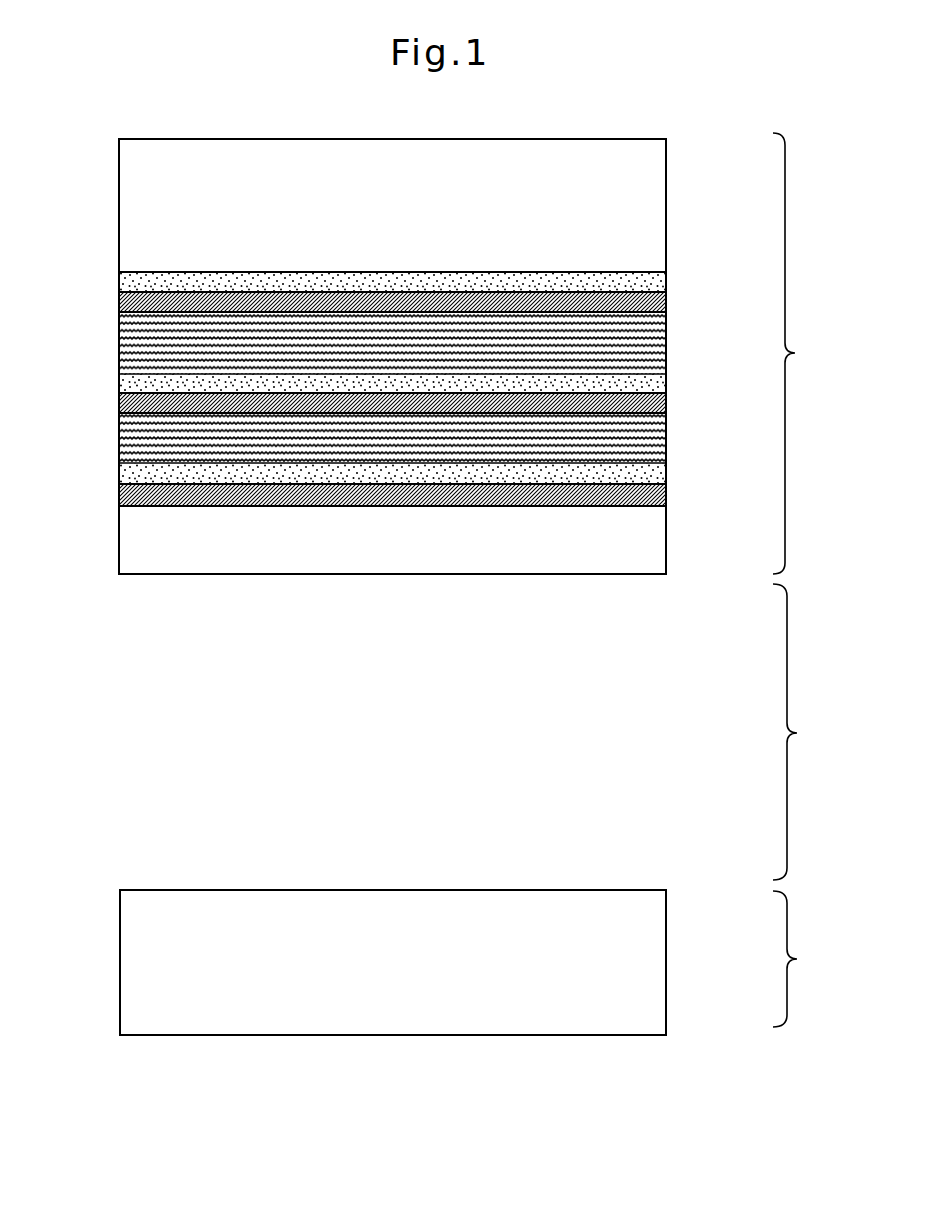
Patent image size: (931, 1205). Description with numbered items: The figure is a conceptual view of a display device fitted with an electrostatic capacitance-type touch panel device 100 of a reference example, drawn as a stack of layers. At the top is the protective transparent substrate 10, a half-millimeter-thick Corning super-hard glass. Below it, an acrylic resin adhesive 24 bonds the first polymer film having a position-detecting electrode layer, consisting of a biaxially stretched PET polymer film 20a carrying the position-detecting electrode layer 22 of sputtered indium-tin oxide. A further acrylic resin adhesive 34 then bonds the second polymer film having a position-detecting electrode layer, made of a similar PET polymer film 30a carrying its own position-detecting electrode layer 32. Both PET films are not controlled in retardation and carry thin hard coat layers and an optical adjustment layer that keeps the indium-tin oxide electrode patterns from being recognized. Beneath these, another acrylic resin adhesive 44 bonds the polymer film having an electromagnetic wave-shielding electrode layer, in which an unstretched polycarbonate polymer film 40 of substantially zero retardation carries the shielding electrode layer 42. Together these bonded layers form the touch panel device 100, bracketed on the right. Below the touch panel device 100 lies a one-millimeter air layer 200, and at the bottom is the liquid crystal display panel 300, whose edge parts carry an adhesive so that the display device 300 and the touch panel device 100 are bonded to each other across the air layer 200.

The protective transparent substrate 10 is at (130, 170).
The adhesive 24 is at (615, 275).
The position-detecting electrode layer 22 is at (664, 290).
The polymer film having a position-detecting electrode layer 20a is at (658, 360).
The adhesive 34 is at (170, 382).
The position-detecting electrode layer 32 is at (120, 388).
The polymer film having a position-detecting electrode layer 30a is at (125, 436).
The adhesive 44 is at (625, 472).
The shielding electrode layer 42 is at (657, 492).
The polymer film having a shielding electrode layer 40 is at (656, 543).
The touch panel device 100 is at (802, 353).
The air layer 200 is at (803, 732).
The display device 300 is at (476, 962).